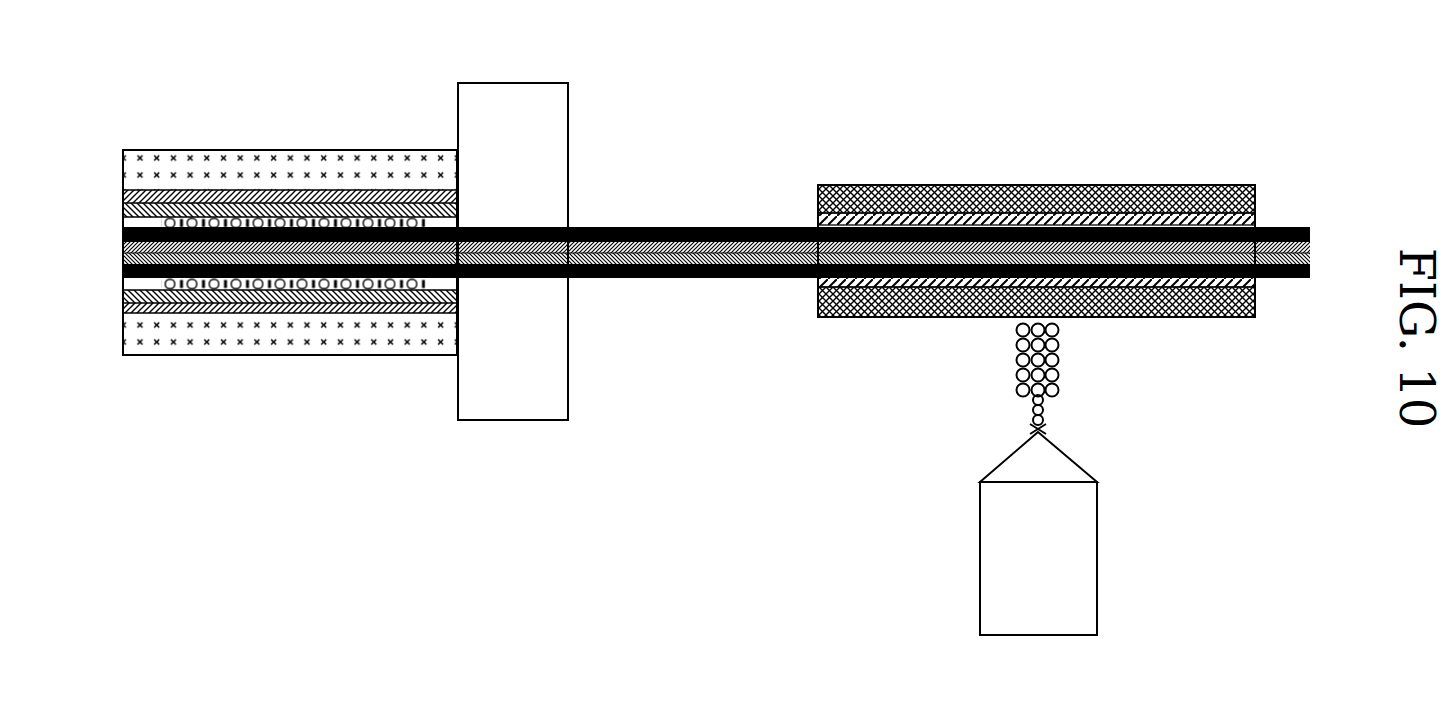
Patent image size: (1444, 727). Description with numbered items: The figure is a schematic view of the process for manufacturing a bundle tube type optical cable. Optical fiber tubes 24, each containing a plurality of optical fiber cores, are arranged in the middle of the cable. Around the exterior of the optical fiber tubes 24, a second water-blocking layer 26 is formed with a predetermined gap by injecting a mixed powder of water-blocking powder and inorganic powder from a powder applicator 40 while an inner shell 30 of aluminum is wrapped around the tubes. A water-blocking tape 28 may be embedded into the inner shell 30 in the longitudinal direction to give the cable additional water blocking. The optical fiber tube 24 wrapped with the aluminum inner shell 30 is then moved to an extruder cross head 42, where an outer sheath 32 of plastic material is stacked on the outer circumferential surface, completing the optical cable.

The optical fiber tube 24 is at (734, 225).
The second water-blocking layer 26 is at (1020, 358).
The water-blocking tape 28 is at (1126, 185).
The inner shell 30 is at (1001, 185).
The outer sheath 32 is at (285, 165).
The powder applicator 40 is at (990, 564).
The extruder cross head 42 is at (524, 402).